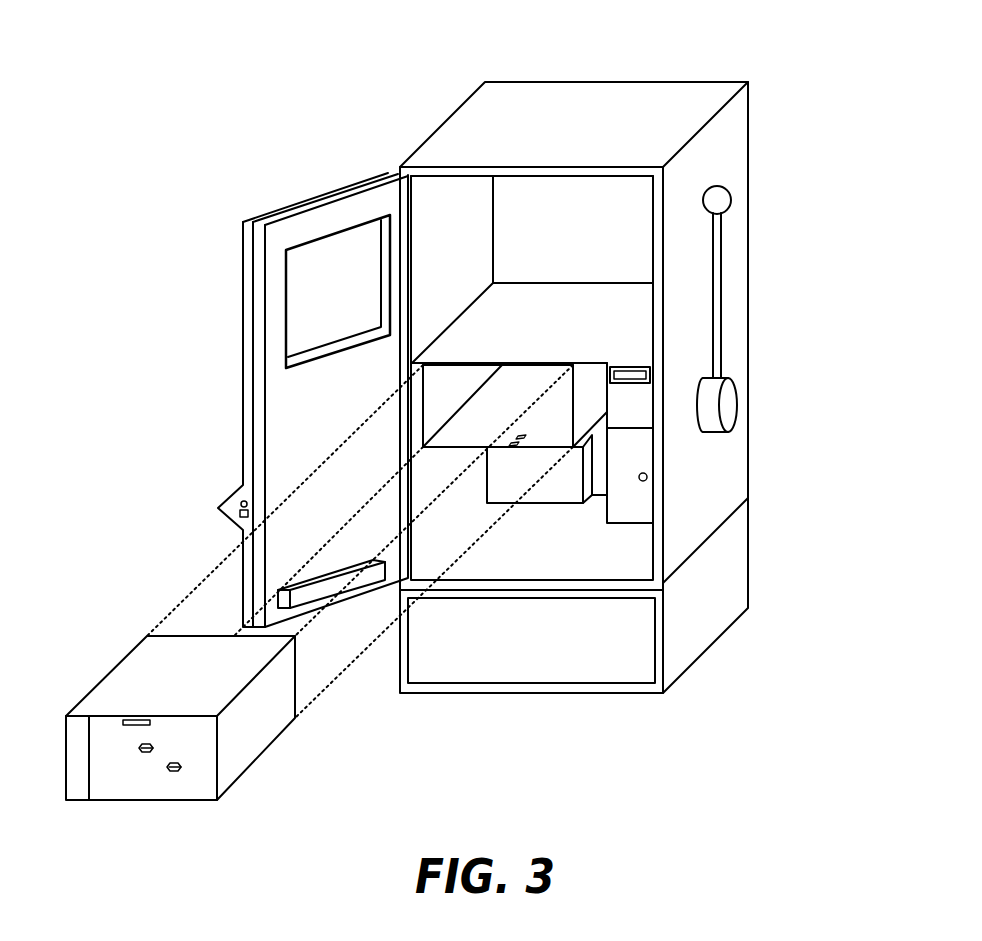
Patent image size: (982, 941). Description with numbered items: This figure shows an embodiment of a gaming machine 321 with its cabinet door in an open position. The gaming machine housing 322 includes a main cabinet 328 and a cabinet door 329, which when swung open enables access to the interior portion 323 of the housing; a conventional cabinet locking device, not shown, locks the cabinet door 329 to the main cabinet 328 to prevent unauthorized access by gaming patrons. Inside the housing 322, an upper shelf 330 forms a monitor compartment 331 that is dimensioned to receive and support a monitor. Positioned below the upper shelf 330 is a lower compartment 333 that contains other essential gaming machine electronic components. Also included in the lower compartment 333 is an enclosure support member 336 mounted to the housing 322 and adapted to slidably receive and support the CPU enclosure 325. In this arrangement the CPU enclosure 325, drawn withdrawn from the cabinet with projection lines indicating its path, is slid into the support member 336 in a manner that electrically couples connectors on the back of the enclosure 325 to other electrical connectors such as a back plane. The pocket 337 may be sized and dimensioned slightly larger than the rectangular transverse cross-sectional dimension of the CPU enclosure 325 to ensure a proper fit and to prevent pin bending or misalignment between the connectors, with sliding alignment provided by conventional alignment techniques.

The storage cabinet 321 is at (766, 268).
The gaming machine housing 322 is at (441, 121).
The interior portion 323 is at (577, 193).
The CPU enclosure 325 is at (250, 754).
The main cabinet 328 is at (733, 470).
The cabinet door 329 is at (245, 366).
The upper shelf 330 is at (463, 338).
The monitor compartment 331 is at (592, 265).
The lower compartment 333 is at (575, 555).
The enclosure support member 336 is at (606, 394).
The pocket 337 is at (525, 405).